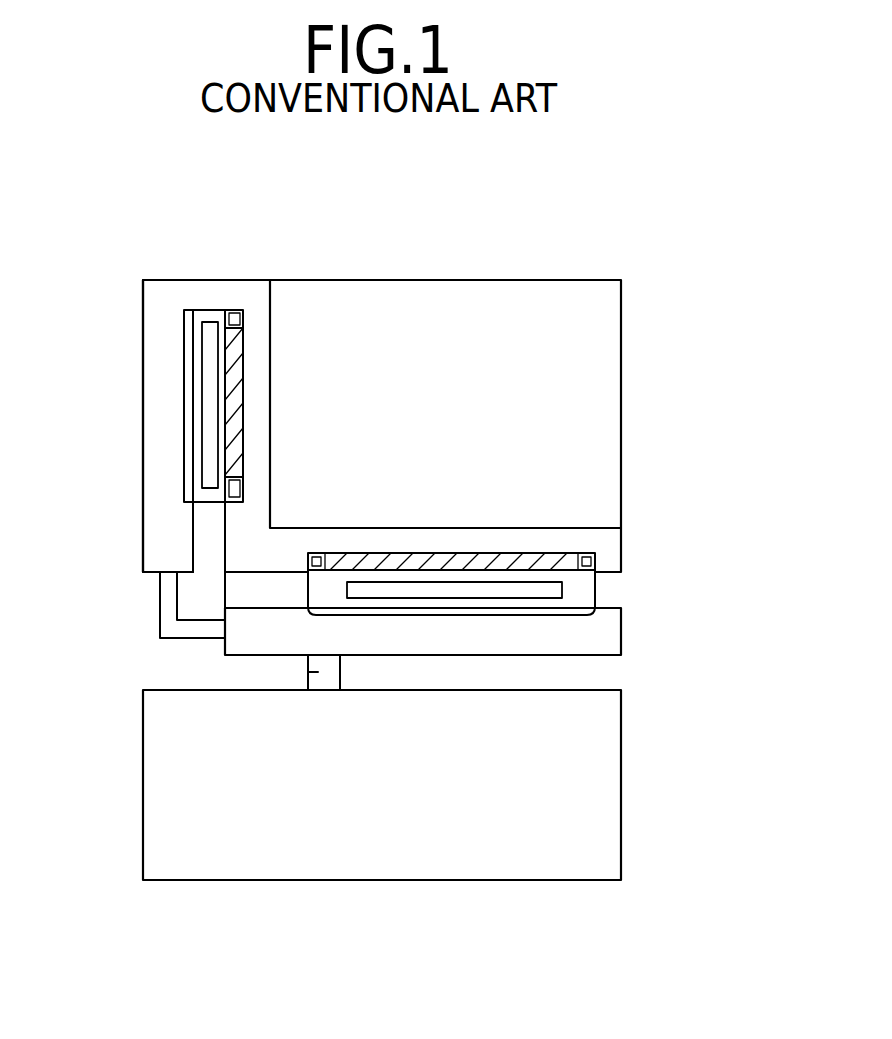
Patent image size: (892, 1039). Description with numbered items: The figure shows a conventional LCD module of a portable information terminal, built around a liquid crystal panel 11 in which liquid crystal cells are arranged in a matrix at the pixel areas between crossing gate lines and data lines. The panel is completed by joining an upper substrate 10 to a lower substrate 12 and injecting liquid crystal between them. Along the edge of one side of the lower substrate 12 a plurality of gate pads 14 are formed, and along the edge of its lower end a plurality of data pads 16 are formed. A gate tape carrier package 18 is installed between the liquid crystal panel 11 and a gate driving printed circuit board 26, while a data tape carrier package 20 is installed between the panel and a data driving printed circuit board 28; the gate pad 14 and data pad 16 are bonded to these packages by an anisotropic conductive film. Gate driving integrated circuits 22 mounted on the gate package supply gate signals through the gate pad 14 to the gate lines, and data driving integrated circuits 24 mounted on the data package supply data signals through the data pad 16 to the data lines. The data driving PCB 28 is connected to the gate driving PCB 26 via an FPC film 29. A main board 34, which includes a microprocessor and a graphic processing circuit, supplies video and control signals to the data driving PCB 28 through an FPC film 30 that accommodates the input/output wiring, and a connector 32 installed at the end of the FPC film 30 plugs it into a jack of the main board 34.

The upper substrate 10 is at (602, 510).
The liquid crystal panel 11 is at (668, 430).
The lower substrate 12 is at (621, 548).
The gate pad 14 is at (240, 360).
The data pad 16 is at (595, 566).
The gate tape carrier package 18 is at (215, 310).
The data tape carrier package 20 is at (578, 583).
The gate driving integrated circuit 22 is at (208, 332).
The data driving integrated circuit 24 is at (560, 590).
The gate driving printed circuit board 26 is at (152, 428).
The data driving printed circuit board 28 is at (240, 640).
The FPC film 29 is at (160, 590).
The FPC film 30 is at (318, 672).
The connector 32 is at (340, 683).
The main board 34 is at (152, 778).